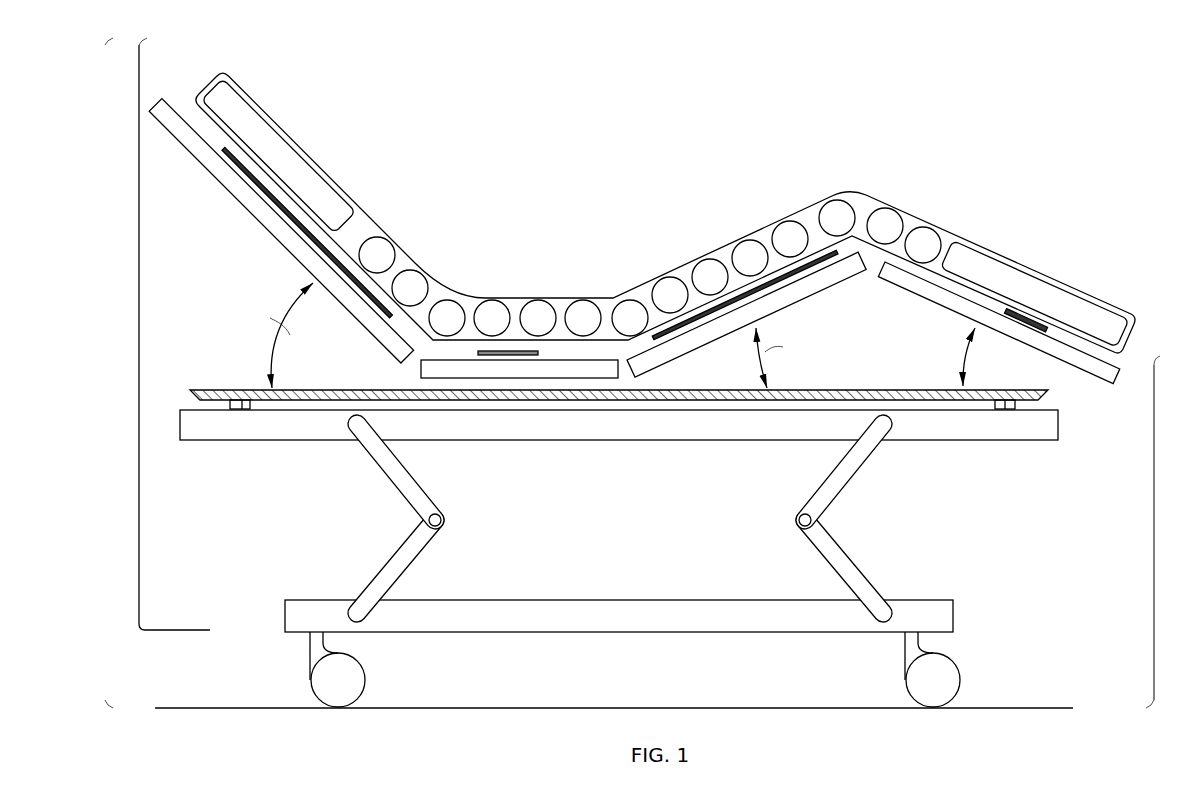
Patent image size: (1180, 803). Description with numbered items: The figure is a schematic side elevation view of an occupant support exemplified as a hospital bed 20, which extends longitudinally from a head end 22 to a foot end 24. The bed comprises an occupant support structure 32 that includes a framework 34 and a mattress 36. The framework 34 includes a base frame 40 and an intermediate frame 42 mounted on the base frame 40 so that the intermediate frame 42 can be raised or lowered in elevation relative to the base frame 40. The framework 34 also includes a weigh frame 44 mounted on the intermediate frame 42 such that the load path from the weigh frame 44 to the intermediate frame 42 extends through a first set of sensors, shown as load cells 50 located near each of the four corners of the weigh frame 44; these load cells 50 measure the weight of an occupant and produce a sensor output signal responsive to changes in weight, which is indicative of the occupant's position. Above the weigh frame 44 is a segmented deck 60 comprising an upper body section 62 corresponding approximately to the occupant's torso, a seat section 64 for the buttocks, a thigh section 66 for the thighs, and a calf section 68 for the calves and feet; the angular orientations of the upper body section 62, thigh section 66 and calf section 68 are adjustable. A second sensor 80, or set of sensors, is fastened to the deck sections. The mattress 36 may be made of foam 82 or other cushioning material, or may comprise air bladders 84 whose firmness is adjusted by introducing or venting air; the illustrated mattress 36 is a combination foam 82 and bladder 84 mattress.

The hospital bed 20 is at (964, 121).
The head end 22 is at (166, 431).
The foot end 24 is at (1104, 464).
The occupant support structure 32 is at (103, 404).
The framework 34 is at (139, 345).
The mattress 36 is at (674, 234).
The base frame 40 is at (505, 605).
The intermediate frame 42 is at (495, 432).
The weigh frame 44 is at (820, 391).
The load cells 50 is at (243, 400).
The segmented deck 60 is at (143, 109).
The upper body section 62 is at (245, 200).
The seat section 64 is at (455, 372).
The thigh section 66 is at (795, 305).
The calf section 68 is at (932, 300).
The second sensor 80 is at (293, 225).
The foam 82 is at (270, 118).
The air bladders 84 is at (405, 280).